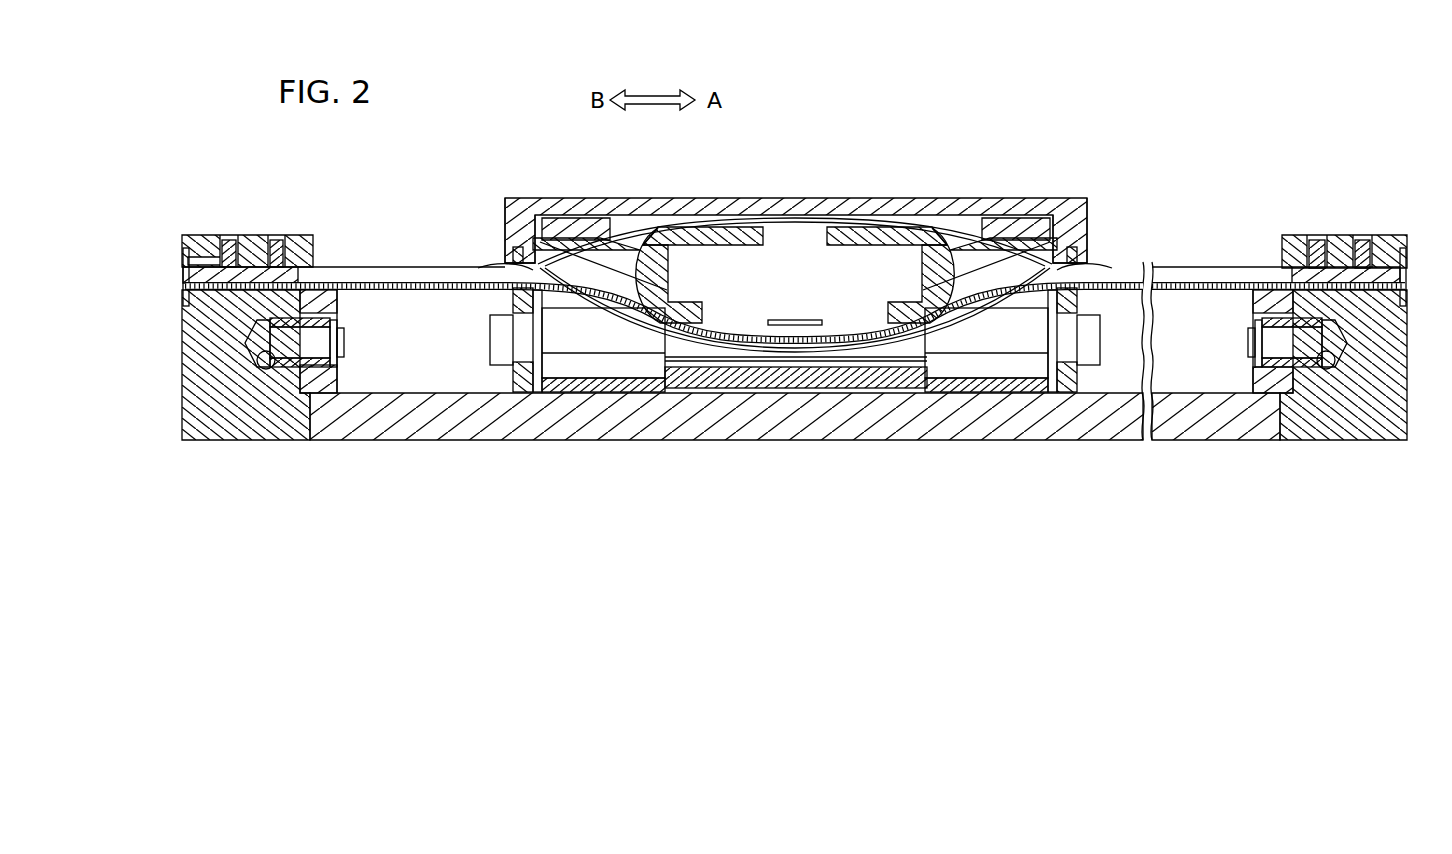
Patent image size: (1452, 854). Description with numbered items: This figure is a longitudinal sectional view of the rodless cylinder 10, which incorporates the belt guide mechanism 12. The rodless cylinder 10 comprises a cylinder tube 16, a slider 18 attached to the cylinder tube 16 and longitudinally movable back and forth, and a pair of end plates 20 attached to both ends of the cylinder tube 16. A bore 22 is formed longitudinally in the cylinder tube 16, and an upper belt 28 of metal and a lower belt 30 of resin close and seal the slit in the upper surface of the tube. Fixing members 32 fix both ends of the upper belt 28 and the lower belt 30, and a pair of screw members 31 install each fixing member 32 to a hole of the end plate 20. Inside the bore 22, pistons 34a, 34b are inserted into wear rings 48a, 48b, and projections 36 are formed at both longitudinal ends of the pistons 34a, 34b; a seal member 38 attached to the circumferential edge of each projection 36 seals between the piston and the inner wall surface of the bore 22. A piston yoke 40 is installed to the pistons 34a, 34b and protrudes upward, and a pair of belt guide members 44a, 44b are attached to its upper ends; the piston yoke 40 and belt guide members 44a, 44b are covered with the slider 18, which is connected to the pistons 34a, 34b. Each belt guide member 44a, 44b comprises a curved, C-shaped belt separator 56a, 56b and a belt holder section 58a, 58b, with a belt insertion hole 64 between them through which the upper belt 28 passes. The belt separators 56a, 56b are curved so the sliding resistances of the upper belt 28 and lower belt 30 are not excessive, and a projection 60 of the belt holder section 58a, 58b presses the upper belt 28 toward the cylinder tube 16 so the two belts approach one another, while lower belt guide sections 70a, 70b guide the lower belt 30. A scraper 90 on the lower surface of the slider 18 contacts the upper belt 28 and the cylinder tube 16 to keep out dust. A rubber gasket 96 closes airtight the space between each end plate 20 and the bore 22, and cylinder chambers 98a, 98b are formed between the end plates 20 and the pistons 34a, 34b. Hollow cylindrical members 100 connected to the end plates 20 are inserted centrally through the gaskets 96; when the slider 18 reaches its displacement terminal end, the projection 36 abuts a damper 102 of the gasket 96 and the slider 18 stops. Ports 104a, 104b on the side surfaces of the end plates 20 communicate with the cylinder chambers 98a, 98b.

The rodless cylinder 10 is at (1281, 128).
The belt guide mechanism 12 is at (645, 225).
The cylinder tube 16 is at (822, 415).
The slider 18 is at (783, 200).
The end plate 20 is at (200, 440).
The bore 22 is at (486, 380).
The upper belt 28 is at (390, 267).
The lower belt 30 is at (380, 292).
The screw member 31 is at (229, 240).
The fixing member 32 is at (186, 255).
The piston 34a is at (633, 355).
The piston 34b is at (998, 358).
The projection 36 is at (467, 393).
The seal member 38 is at (520, 375).
The piston yoke 40 is at (732, 388).
The belt guide member 44a is at (711, 220).
The belt guide member 44b is at (886, 220).
The wear ring 48a is at (570, 392).
The wear ring 48b is at (944, 392).
The belt separator 56a is at (688, 307).
The belt separator 56b is at (933, 277).
The belt holder section 58a is at (515, 250).
The belt holder section 58b is at (1063, 240).
The projection 60 is at (507, 268).
The belt insertion hole 64 is at (596, 245).
The lower belt guide section 70a is at (507, 308).
The lower belt guide section 70b is at (1100, 310).
The scraper 90 is at (503, 253).
The gasket 96 is at (305, 380).
The cylinder chamber 98a is at (430, 378).
The cylinder chamber 98b is at (1172, 390).
The hollow cylindrical member 100 is at (310, 317).
The damper 102 is at (343, 340).
The port 104a is at (265, 372).
The port 104b is at (1320, 375).